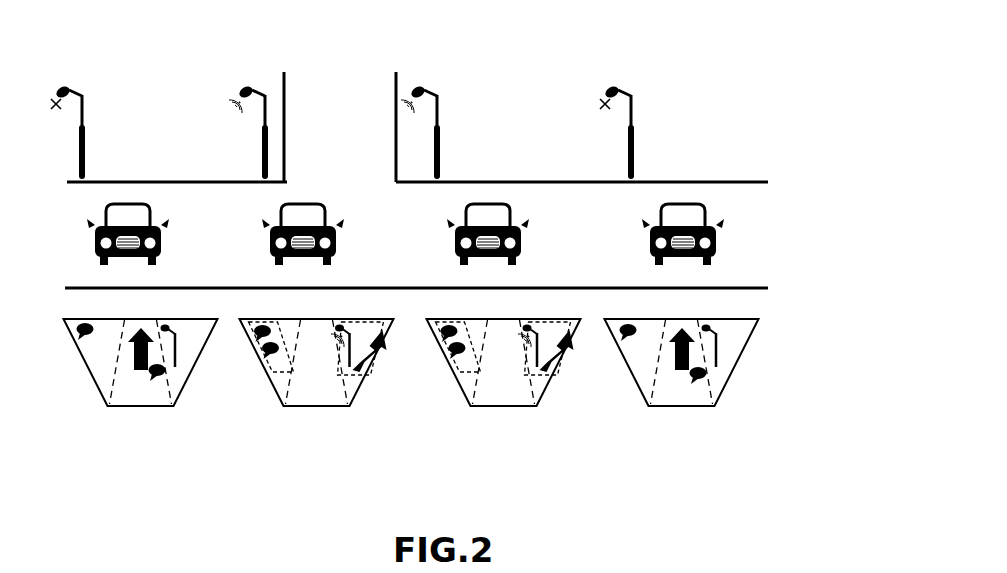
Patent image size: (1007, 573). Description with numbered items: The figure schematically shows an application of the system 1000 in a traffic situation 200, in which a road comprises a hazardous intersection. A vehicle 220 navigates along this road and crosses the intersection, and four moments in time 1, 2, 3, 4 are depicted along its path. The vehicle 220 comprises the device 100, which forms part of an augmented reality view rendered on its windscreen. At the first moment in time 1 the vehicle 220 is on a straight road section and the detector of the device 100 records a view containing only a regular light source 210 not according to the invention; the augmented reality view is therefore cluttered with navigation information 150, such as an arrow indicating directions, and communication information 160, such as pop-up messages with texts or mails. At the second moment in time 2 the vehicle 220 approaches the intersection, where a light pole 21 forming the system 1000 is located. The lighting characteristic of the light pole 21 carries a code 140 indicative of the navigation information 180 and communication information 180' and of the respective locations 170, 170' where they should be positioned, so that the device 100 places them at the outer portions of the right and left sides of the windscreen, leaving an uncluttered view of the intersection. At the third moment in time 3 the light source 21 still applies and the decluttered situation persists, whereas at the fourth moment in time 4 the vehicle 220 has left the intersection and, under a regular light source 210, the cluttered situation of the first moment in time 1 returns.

The system 1000 is at (788, 81).
The traffic situation 200 is at (409, 95).
The regular light source 210 is at (93, 123).
The light pole 21 is at (273, 121).
The device 100 is at (481, 232).
The vehicle 220 is at (772, 241).
The code 140 is at (528, 330).
The navigation information 150 is at (680, 372).
The communication information 160 is at (705, 378).
The location 170 is at (563, 368).
The navigation information 180 is at (573, 362).
The location 170' is at (442, 358).
The communication information 180' is at (431, 347).
The first moment in time 1 is at (685, 397).
The second moment in time 2 is at (501, 387).
The third moment in time 3 is at (317, 397).
The fourth moment in time 4 is at (141, 397).